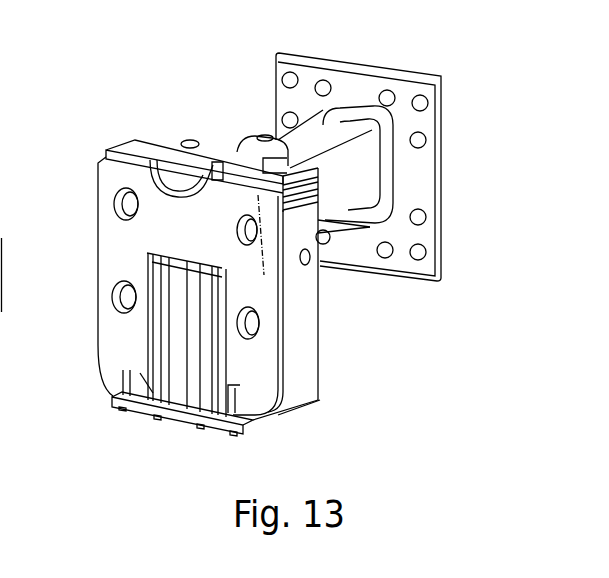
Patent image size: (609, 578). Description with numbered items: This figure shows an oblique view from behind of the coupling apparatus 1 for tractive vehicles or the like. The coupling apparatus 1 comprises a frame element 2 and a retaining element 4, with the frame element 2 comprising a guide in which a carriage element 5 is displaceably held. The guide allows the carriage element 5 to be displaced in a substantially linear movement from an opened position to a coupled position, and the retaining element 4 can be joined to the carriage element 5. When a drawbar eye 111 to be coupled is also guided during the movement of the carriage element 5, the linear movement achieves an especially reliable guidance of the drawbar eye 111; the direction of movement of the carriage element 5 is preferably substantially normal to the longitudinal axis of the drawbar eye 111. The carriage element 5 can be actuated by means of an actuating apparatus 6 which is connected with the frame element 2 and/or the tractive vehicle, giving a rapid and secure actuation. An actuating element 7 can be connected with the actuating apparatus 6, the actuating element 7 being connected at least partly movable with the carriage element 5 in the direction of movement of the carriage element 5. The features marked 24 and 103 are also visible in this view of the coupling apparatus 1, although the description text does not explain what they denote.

The coupling apparatus 1 is at (147, 440).
The frame element 2 is at (199, 242).
The retaining element 4 is at (277, 135).
The carriage element 5 is at (245, 165).
The actuating apparatus 6 is at (183, 345).
The actuating element 7 is at (193, 187).
The hole 24 is at (247, 228).
The base plate 103 is at (134, 403).
The drawbar eye 111 is at (348, 183).